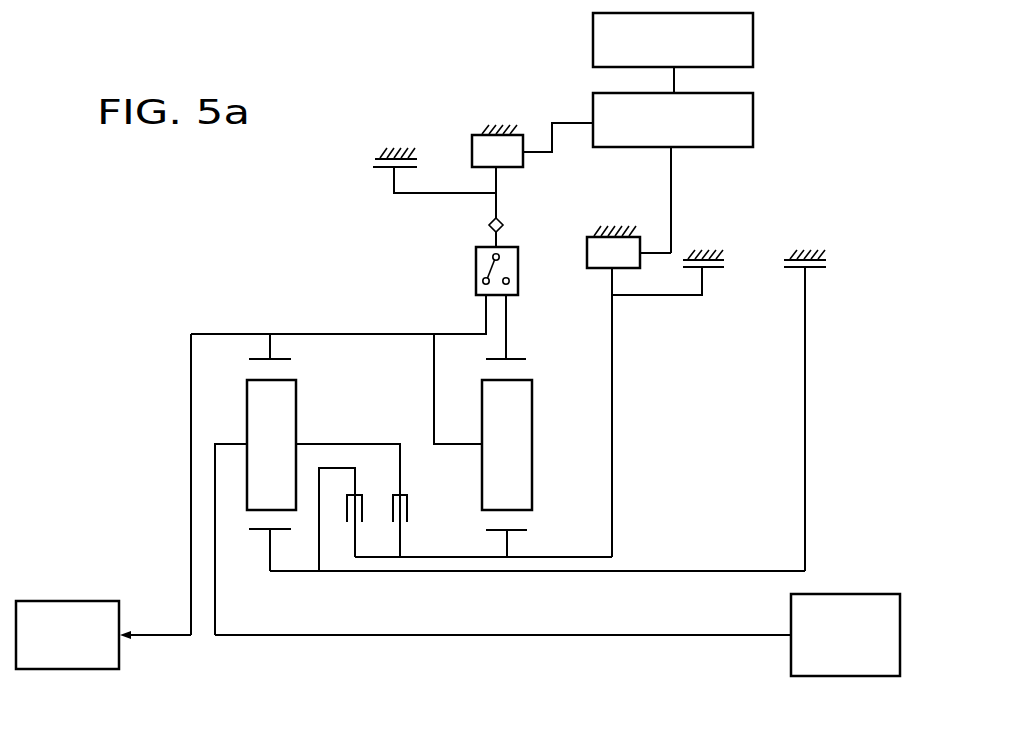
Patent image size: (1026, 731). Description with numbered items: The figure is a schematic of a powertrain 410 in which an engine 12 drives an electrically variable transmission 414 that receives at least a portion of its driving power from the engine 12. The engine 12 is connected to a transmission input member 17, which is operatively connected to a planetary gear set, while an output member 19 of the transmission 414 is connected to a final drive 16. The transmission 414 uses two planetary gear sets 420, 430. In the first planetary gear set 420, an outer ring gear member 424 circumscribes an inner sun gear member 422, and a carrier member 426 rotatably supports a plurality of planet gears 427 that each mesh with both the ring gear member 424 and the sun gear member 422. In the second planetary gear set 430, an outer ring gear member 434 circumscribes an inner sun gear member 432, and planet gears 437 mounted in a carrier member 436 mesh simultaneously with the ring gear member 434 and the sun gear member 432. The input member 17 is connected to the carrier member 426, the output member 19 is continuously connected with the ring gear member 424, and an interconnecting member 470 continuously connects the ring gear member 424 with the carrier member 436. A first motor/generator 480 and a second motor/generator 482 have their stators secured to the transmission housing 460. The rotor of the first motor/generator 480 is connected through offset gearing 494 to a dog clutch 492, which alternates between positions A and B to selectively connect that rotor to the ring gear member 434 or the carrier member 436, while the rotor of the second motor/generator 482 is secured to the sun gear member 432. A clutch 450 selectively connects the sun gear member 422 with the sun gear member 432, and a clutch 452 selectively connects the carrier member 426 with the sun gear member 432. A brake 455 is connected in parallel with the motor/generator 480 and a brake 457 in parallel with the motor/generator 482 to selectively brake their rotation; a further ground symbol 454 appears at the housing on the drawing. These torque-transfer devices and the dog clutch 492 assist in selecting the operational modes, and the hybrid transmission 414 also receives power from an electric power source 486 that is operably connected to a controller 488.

The engine 12 is at (827, 575).
The final drive 16 is at (82, 585).
The transmission input member 17 is at (752, 637).
The transmission output member 19 is at (163, 638).
The powertrain 410 is at (120, 388).
The electrically variable transmission 414 is at (313, 288).
The first planetary gear set 420 is at (260, 532).
The sun gear member 422 is at (280, 530).
The ring gear member 424 is at (262, 358).
The carrier member 426 is at (243, 425).
The planet gears 427 is at (287, 434).
The second planetary gear set 430 is at (497, 532).
The sun gear member 432 is at (517, 532).
The ring gear member 434 is at (515, 358).
The carrier member 436 is at (472, 452).
The planet gears 437 is at (522, 434).
The first clutch 450 is at (362, 525).
The second clutch 452 is at (408, 527).
The transmission housing ground 454 is at (828, 260).
The brake 455 is at (370, 160).
The brake 457 is at (730, 260).
The transmission housing 460 is at (378, 150).
The interconnecting member 470 is at (357, 332).
The first motor/generator 480 is at (467, 130).
The second motor/generator 482 is at (577, 232).
The electric power source 486 is at (753, 42).
The controller 488 is at (753, 120).
The dog clutch 492 is at (475, 270).
The offset gearing 494 is at (483, 223).